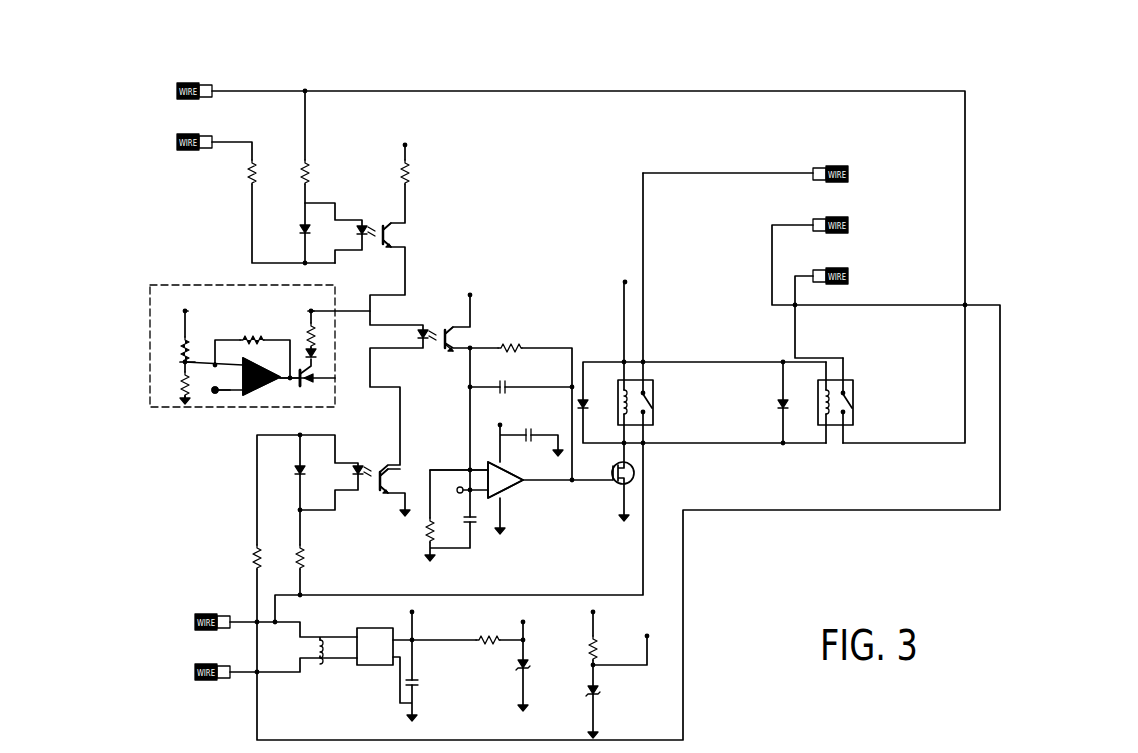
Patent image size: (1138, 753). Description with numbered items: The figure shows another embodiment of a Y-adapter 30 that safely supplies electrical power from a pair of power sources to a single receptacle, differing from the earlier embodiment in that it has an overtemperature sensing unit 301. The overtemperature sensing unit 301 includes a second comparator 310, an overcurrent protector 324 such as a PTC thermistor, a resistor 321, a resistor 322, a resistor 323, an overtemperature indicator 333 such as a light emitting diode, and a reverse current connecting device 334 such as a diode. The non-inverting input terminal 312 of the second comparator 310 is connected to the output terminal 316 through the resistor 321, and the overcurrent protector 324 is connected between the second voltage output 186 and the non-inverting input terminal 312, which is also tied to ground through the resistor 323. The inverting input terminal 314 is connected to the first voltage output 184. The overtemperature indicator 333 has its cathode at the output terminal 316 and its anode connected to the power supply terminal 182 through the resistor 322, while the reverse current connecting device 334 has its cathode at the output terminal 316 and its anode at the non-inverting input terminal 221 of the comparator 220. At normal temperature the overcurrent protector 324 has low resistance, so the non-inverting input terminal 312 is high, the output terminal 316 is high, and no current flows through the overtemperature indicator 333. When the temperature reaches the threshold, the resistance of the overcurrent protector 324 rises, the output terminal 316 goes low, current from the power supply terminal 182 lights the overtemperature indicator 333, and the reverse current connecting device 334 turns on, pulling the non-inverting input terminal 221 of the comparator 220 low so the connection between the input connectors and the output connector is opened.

The Y-adapter 30 is at (615, 389).
The overtemperature sensing unit 301 is at (165, 285).
The second voltage output 186 is at (190, 311).
The power supply terminal 182 is at (313, 321).
The resistor 321 is at (268, 340).
The resistor 322 is at (361, 312).
The overcurrent protector 324 is at (186, 343).
The non-inverting input terminal 312 is at (185, 360).
The resistor 323 is at (185, 396).
The first voltage output 184 is at (213, 394).
The inverting input terminal 314 is at (228, 394).
The second comparator 310 is at (262, 393).
The output terminal 316 is at (279, 382).
The overtemperature indicator 333 is at (317, 362).
The reverse current connecting device 334 is at (314, 383).
The non-inverting input terminal 221 is at (481, 467).
The comparator 220 is at (529, 507).